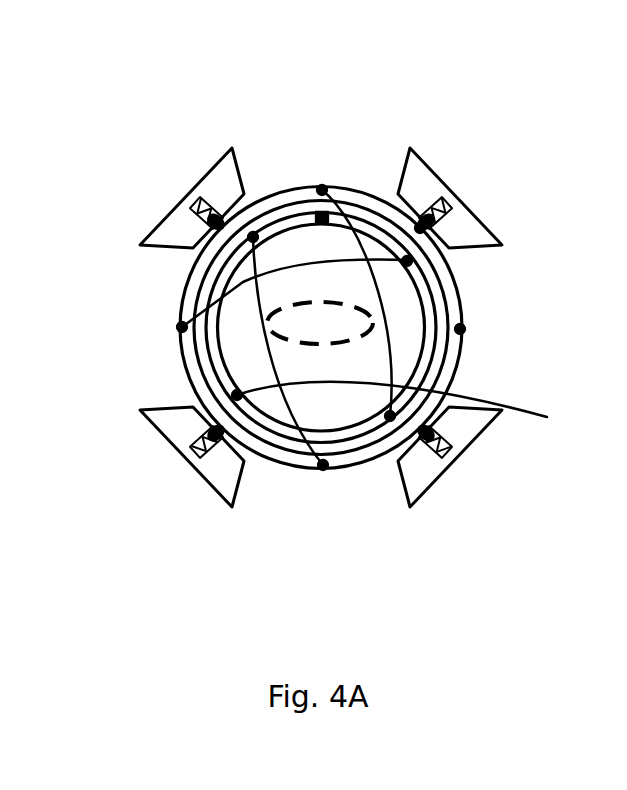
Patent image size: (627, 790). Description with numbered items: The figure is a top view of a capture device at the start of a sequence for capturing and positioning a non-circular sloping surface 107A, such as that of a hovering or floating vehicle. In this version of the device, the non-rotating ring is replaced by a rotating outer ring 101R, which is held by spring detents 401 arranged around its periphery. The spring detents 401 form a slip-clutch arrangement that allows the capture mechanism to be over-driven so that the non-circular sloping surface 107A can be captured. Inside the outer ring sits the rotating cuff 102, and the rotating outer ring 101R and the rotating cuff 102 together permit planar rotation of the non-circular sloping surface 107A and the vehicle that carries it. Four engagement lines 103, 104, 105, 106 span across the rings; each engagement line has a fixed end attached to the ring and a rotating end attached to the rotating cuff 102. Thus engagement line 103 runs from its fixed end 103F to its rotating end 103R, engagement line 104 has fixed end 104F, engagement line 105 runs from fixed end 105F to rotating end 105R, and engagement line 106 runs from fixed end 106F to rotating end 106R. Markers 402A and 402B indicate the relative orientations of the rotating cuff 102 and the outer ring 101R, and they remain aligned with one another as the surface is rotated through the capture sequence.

The spring detent 401 is at (232, 148).
The marker 402A is at (419, 226).
The marker 402B is at (320, 213).
The rotating outer ring 101R is at (280, 424).
The rotating cuff 102 is at (212, 347).
The engagement line 103 is at (295, 438).
The fixed end of engagement line 103F is at (323, 467).
The rotating end of engagement line 103R is at (253, 235).
The engagement line 104 is at (243, 282).
The fixed end of engagement line 104F is at (182, 327).
The engagement line 105 is at (411, 411).
The fixed end of engagement line 105F is at (462, 330).
The rotating end of engagement line 105R is at (237, 395).
The engagement line 106 is at (375, 287).
The fixed end of engagement line 106F is at (323, 188).
The rotating end of engagement line 106R is at (390, 416).
The non-circular sloping surface 107A is at (365, 329).